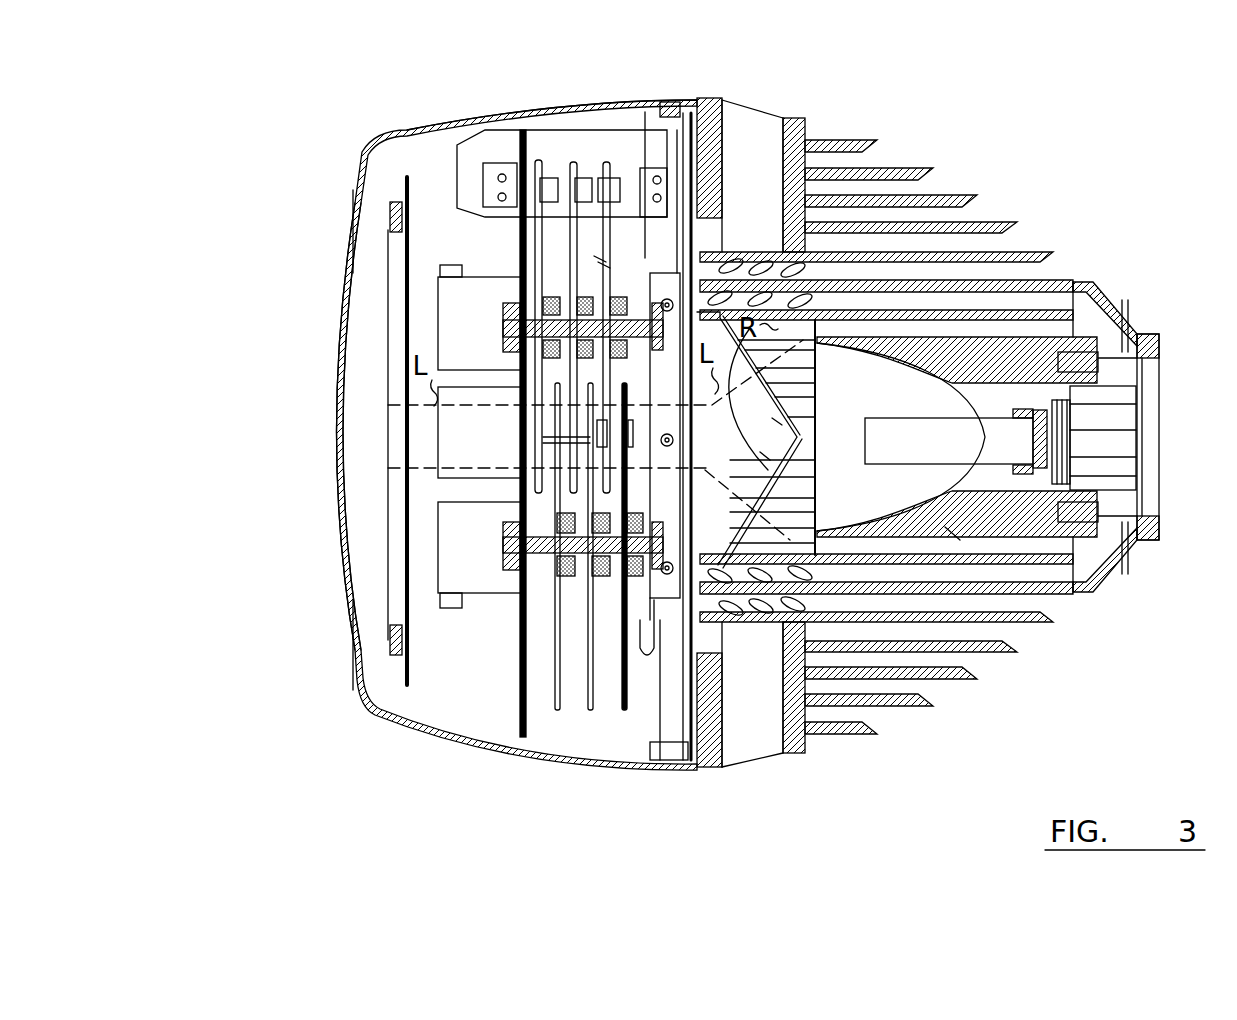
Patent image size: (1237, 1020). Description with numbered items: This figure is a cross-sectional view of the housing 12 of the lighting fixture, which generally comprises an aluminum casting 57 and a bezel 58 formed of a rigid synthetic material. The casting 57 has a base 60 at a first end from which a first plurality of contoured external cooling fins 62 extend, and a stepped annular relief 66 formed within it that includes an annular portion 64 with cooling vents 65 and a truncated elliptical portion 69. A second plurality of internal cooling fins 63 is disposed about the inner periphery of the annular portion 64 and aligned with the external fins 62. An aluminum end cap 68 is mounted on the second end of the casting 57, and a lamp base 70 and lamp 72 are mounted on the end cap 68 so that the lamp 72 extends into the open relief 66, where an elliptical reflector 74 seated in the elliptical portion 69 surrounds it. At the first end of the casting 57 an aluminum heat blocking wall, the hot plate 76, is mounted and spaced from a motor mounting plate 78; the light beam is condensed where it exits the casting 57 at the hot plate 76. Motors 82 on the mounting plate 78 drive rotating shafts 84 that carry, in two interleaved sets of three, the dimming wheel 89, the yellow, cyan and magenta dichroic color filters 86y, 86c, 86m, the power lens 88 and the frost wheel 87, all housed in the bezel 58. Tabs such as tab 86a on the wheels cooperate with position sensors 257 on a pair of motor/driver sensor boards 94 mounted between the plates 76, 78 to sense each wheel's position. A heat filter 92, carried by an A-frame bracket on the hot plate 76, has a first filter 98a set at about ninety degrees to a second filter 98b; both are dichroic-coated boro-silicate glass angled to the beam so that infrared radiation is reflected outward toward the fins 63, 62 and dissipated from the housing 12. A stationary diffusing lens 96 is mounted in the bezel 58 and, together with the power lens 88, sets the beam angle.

The housing 12 is at (405, 124).
The motor/driver sensor boards 94 is at (478, 130).
The power lens 88 is at (538, 158).
The tab 86a is at (606, 160).
The position sensors 257 is at (618, 176).
The base 60 is at (678, 116).
The aluminum casting 57 is at (800, 113).
The stepped annular relief 66 is at (915, 350).
The external cooling fins 62 is at (1015, 222).
The end cap 68 is at (1122, 302).
The annular portion 64 is at (770, 250).
The cooling vents 65 is at (730, 262).
The dichroic coated color filter (magenta) 86m is at (603, 265).
The dichroic coated color filter (yellow) 86y is at (598, 260).
The motors 82 is at (451, 342).
The rotating shafts 84 is at (662, 351).
The first filter 98a is at (774, 422).
The second filter 98b is at (760, 455).
The lamp 72 is at (900, 418).
The heat filter 92 is at (775, 502).
The elliptical reflector 74 is at (862, 540).
The lamp base 70 is at (1012, 478).
The stationary lens 96 is at (335, 437).
The motor mounting plate 78 is at (520, 682).
The bezel 58 is at (490, 752).
The frost wheel 87 is at (557, 703).
The dichroic coated color filter (cyan) 86c is at (583, 698).
The mechanical dimming wheel 89 is at (630, 697).
The hot plate 76 is at (685, 737).
The internal cooling fins 63 is at (748, 632).
The truncated elliptical portion 69 is at (953, 535).